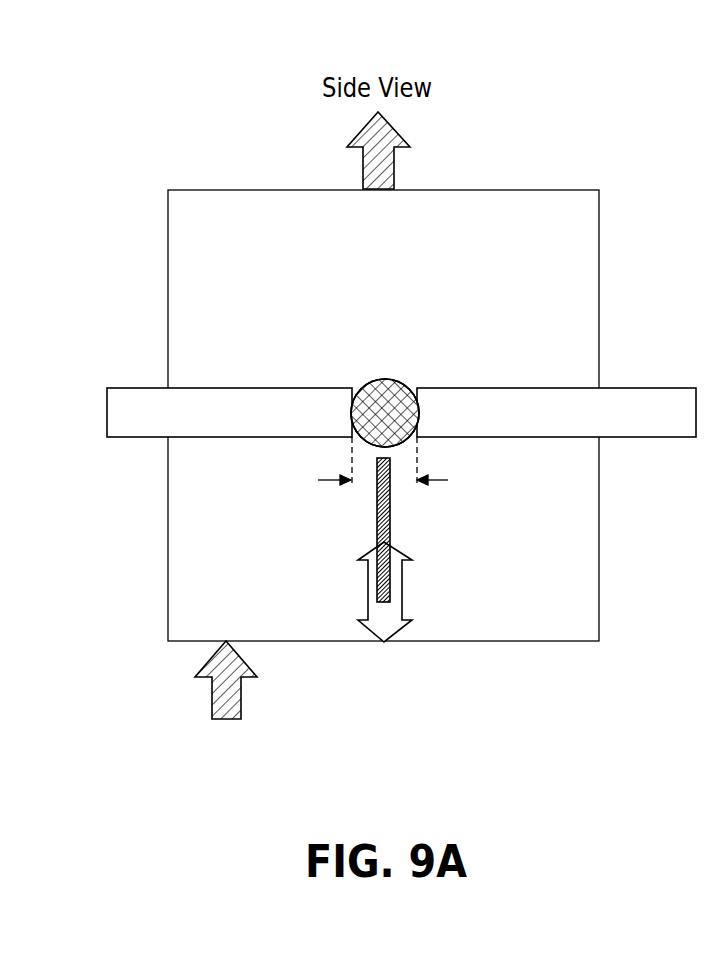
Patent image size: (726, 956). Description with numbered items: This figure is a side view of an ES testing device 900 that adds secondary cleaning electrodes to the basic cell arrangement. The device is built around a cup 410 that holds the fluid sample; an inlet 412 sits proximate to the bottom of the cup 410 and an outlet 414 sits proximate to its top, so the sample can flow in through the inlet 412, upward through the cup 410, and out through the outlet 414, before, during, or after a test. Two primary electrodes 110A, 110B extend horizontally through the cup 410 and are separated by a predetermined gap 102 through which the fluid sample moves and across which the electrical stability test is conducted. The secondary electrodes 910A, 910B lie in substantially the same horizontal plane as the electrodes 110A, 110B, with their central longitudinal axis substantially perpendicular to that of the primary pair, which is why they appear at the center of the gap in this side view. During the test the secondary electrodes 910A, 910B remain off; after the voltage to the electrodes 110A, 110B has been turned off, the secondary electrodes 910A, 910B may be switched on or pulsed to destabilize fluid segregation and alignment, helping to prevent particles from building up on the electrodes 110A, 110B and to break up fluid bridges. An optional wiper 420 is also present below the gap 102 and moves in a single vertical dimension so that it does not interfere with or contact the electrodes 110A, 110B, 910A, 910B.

The ES testing device 900 is at (220, 94).
The cup 410 is at (166, 585).
The outlet 414 is at (392, 168).
The inlet 412 is at (242, 697).
The electrode 110A is at (142, 440).
The electrode 110B is at (627, 440).
The secondary (cleaning) electrode 910A is at (404, 380).
The secondary (cleaning) electrode 910B is at (385, 413).
The predetermined gap 102 is at (330, 482).
The wiper 420 is at (377, 525).